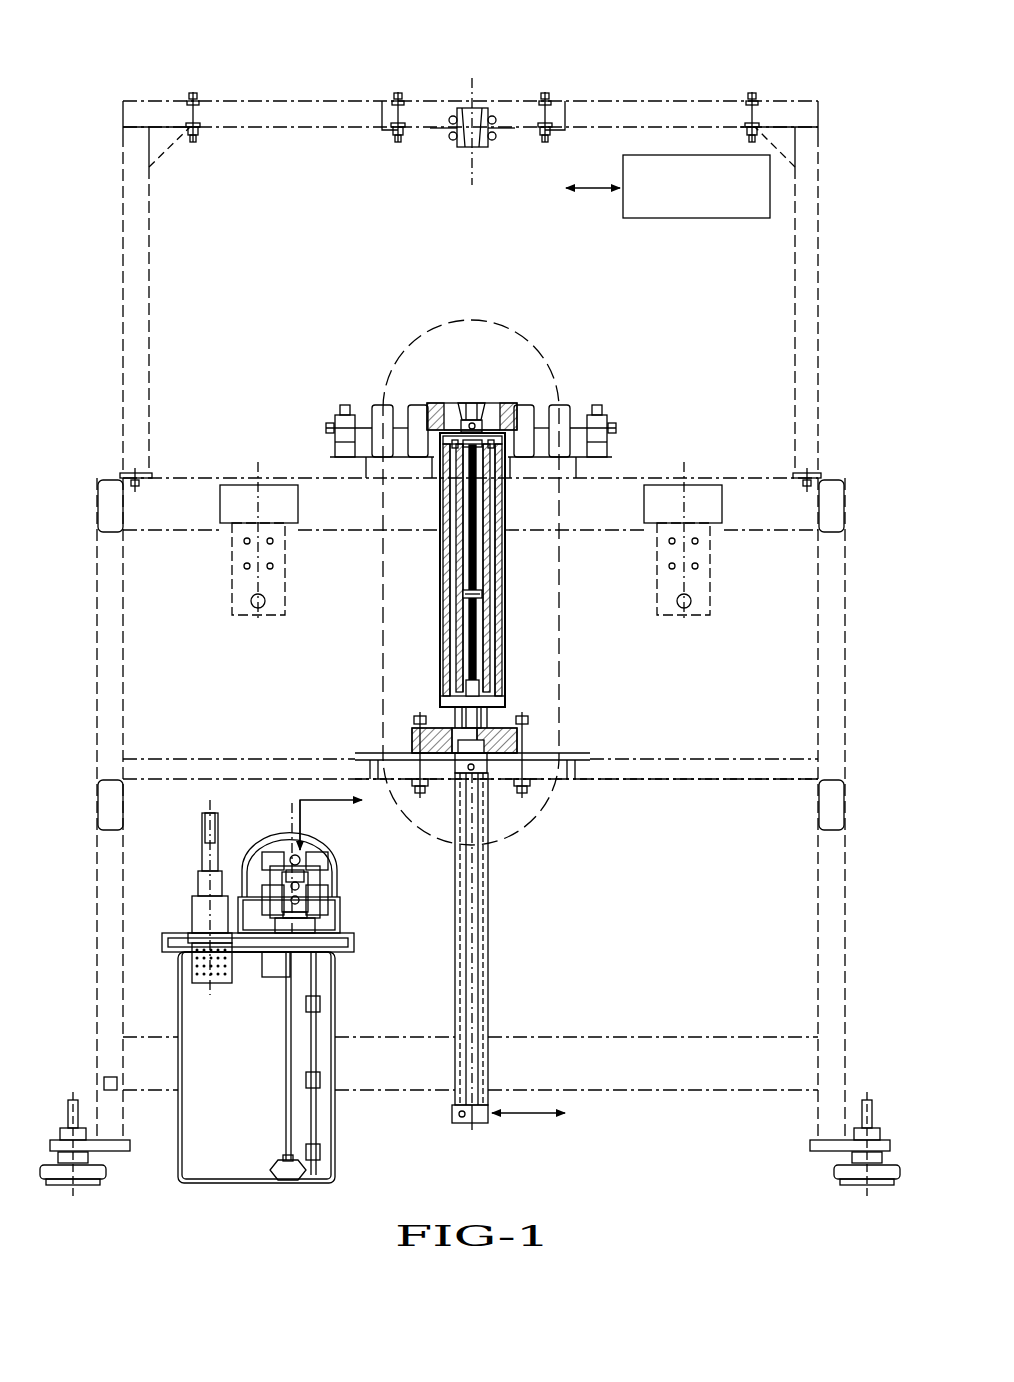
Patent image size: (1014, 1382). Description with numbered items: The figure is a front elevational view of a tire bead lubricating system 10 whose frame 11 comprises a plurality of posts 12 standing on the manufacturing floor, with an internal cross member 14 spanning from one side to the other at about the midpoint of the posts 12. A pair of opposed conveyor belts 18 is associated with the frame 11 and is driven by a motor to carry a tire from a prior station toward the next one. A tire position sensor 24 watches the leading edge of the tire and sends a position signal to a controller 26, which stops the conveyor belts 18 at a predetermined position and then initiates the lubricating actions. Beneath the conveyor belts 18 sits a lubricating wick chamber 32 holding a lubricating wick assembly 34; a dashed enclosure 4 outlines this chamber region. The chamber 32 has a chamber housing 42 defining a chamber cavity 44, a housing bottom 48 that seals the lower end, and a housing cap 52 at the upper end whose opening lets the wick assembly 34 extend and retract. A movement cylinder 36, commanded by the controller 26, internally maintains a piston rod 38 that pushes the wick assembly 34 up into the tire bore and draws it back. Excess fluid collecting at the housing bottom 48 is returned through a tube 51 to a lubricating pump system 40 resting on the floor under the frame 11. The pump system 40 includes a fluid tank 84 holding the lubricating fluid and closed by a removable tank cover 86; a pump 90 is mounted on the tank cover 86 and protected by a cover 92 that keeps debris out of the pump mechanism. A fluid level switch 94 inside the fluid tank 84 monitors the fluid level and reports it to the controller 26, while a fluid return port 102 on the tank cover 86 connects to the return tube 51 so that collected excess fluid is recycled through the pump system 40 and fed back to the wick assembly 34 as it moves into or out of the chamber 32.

The tire bead lubricating system 10 is at (92, 115).
The tire position sensor 24 is at (457, 147).
The controller 26 is at (715, 220).
The section detail area 4 is at (398, 352).
The chamber cavity 44 is at (447, 408).
The lubricating wick assembly 34 is at (477, 405).
The housing cap 52 is at (524, 408).
The conveyor belts 18 is at (420, 410).
The frame 11 is at (852, 618).
The lubricating wick chamber 32 is at (430, 600).
The chamber housing 42 is at (505, 608).
The posts 12 is at (118, 640).
The piston rod 38 is at (468, 726).
The housing bottom 48 is at (490, 730).
The cover 92 is at (300, 852).
The internal cross member 14 is at (712, 770).
The tube 51 is at (207, 860).
The pump 90 is at (322, 886).
The fluid return port 102 is at (205, 914).
The lubricating pump system 40 is at (352, 913).
The movement cylinder 36 is at (492, 906).
The tank cover 86 is at (350, 945).
The fluid level switch 94 is at (318, 1085).
The fluid tank 84 is at (338, 1148).